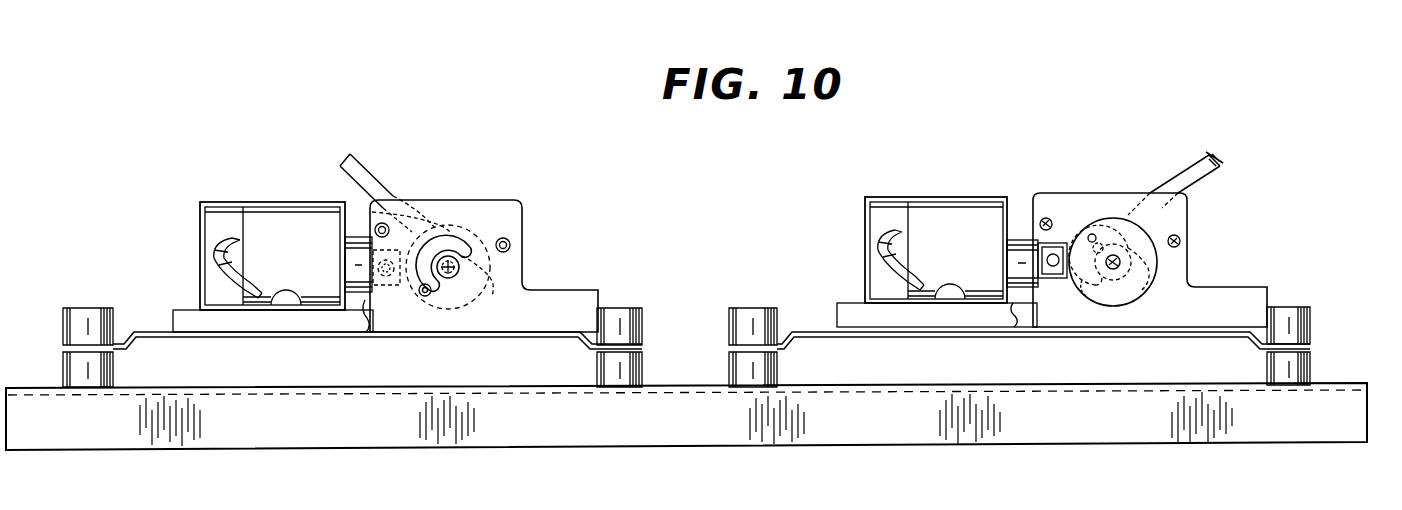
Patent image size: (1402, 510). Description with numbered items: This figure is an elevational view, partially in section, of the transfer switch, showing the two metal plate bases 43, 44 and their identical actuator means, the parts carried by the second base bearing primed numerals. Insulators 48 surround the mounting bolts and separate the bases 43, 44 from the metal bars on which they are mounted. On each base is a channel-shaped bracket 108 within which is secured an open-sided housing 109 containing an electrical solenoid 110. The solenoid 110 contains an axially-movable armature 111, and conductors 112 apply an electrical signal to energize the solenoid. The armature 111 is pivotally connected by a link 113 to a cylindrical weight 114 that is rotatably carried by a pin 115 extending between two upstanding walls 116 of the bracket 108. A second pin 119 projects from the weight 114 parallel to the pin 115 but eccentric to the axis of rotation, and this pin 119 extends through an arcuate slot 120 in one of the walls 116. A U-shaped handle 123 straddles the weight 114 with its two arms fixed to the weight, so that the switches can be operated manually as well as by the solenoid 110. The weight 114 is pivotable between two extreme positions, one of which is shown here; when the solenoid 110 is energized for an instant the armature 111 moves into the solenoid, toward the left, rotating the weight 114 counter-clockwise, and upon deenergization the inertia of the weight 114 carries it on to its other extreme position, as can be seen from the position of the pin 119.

The metal plate base 43 is at (1207, 329).
The metal plate base 44 is at (540, 334).
The insulator 48 is at (112, 374).
The channel-shaped bracket 108 is at (557, 297).
The open-sided housing 109 is at (238, 206).
The electrical solenoid 110 is at (292, 225).
The armature 111 is at (362, 303).
The conductors 112 is at (213, 237).
The link 113 is at (400, 288).
The cylindrical weight 114 is at (452, 300).
The pin 115 is at (493, 297).
The upstanding walls 116 is at (490, 202).
The second pin 119 is at (418, 292).
The arcuate slot 120 is at (472, 236).
The U-shaped handle 123 is at (392, 142).